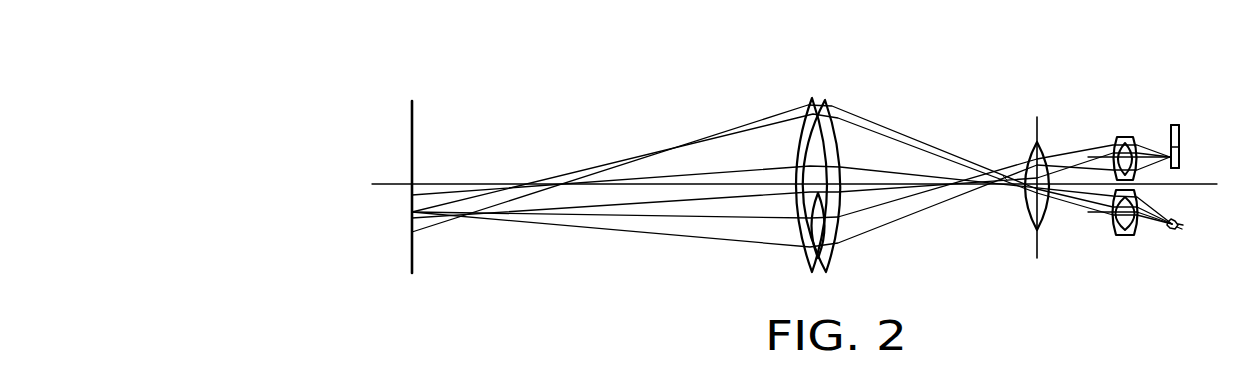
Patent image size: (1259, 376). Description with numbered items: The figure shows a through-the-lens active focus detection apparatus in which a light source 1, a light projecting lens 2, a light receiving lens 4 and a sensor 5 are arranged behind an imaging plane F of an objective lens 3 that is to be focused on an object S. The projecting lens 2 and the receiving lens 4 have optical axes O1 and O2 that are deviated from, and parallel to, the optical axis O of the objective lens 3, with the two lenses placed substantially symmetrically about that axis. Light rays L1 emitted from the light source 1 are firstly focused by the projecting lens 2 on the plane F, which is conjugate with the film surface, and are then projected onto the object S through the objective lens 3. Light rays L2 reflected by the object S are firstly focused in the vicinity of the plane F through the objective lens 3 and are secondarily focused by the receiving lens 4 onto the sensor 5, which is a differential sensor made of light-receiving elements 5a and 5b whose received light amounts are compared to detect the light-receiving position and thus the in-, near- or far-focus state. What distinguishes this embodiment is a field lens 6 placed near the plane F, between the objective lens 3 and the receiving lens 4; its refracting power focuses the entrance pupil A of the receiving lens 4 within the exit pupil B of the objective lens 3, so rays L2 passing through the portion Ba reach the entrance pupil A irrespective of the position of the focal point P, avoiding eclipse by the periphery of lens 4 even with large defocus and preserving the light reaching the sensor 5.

The object S is at (408, 170).
The optical axis O is at (699, 182).
The light rays reflected by the object L2 is at (623, 232).
The exit pupil of the objective lens B is at (807, 120).
The objective lens 3 is at (828, 102).
The portion of the exit pupil Ba is at (828, 236).
The imaging plane F is at (1035, 171).
The field lens 6 is at (1027, 213).
The focal point P is at (1027, 175).
The optical axis of the light receiving lens O2 is at (1092, 151).
The optical axis of the light projecting lens O1 is at (1096, 213).
The entrance pupil of the light receiving lens A is at (1117, 138).
The light receiving lens 4 is at (1131, 137).
The light projecting lens 2 is at (1122, 237).
The sensor 5 is at (1180, 125).
The light-receiving element 5a is at (1182, 133).
The light-receiving element 5b is at (1182, 159).
The light source 1 is at (1181, 220).
The light rays emitted from the light source L1 is at (1149, 228).